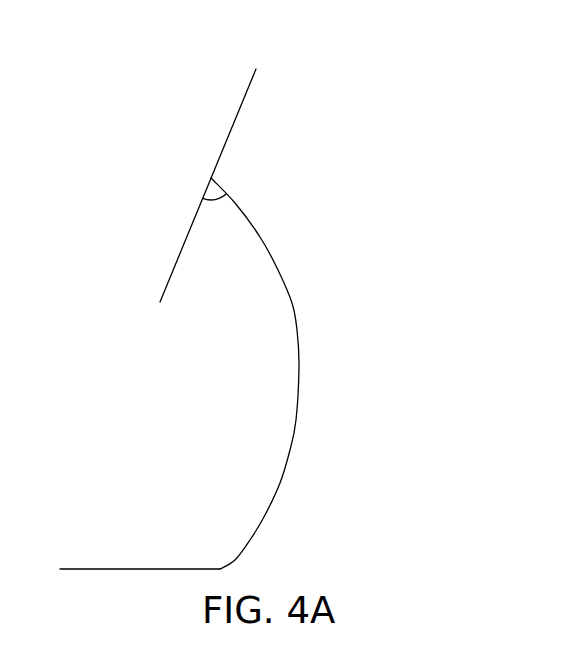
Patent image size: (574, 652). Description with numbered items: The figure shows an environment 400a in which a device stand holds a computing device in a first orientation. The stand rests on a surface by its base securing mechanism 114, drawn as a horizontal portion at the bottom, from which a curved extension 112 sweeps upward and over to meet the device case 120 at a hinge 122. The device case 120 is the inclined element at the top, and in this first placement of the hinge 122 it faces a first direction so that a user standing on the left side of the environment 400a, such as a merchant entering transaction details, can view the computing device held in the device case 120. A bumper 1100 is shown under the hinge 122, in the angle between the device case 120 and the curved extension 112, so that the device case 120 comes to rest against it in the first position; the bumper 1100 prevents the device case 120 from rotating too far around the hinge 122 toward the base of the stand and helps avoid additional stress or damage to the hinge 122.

The environment 400a is at (448, 82).
The device case 120 is at (226, 142).
The curved extension 112 is at (299, 368).
The base securing mechanism 114 is at (138, 567).
The hinge 122 is at (218, 176).
The bumper 1100 is at (222, 204).